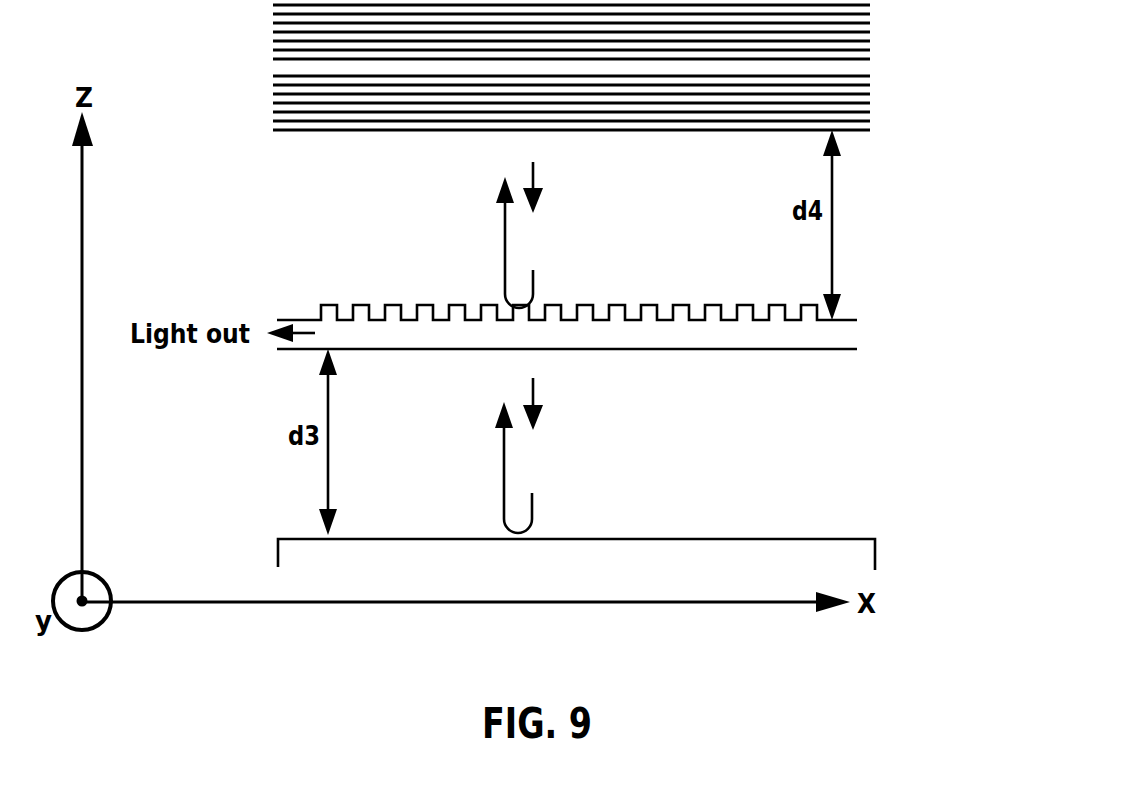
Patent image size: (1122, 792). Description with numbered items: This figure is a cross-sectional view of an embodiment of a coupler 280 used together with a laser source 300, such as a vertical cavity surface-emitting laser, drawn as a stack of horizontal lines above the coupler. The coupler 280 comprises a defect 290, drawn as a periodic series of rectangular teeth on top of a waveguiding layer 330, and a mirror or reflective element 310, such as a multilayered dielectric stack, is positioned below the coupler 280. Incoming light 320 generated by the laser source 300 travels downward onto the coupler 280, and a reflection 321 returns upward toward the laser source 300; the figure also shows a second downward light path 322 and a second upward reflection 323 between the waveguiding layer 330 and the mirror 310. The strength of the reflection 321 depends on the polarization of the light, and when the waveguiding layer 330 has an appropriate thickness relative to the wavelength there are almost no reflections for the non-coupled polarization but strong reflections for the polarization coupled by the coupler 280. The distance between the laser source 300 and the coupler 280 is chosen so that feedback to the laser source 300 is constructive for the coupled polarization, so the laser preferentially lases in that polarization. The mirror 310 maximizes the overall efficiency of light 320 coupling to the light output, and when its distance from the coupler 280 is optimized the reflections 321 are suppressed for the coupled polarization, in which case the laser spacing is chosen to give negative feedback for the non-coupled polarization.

The laser source 300 is at (873, 52).
The defect 290 is at (535, 320).
The waveguiding layer 330 is at (792, 349).
The mirror 310 is at (875, 554).
The coupler 280 is at (851, 249).
The incoming light 320 is at (537, 183).
The reflection 321 is at (505, 246).
The transmitted light 322 is at (535, 397).
The reflected light from substrate 323 is at (504, 470).